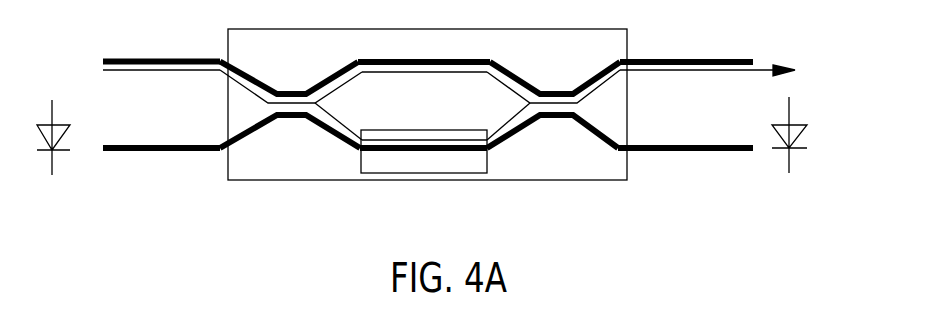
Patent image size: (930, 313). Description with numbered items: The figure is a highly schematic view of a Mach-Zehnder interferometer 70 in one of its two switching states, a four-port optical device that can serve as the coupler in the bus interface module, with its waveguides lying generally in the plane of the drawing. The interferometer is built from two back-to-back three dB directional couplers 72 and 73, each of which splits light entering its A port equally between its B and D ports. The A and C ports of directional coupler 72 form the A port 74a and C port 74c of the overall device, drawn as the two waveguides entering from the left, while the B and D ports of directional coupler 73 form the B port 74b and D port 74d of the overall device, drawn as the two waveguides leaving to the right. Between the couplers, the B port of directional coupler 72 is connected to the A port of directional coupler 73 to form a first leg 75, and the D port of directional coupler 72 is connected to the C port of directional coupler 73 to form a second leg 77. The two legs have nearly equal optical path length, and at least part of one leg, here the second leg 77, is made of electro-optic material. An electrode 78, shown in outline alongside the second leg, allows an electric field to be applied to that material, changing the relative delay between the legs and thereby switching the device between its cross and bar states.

The Mach-Zehnder interferometer 70 is at (222, 209).
The directional coupler 72 is at (271, 70).
The directional coupler 73 is at (563, 72).
The A port 74a is at (100, 61).
The B port 74b is at (755, 60).
The C port 74c is at (100, 147).
The D port 74d is at (756, 149).
The first leg 75 is at (422, 64).
The second leg 77 is at (433, 141).
The electrode 78 is at (410, 173).